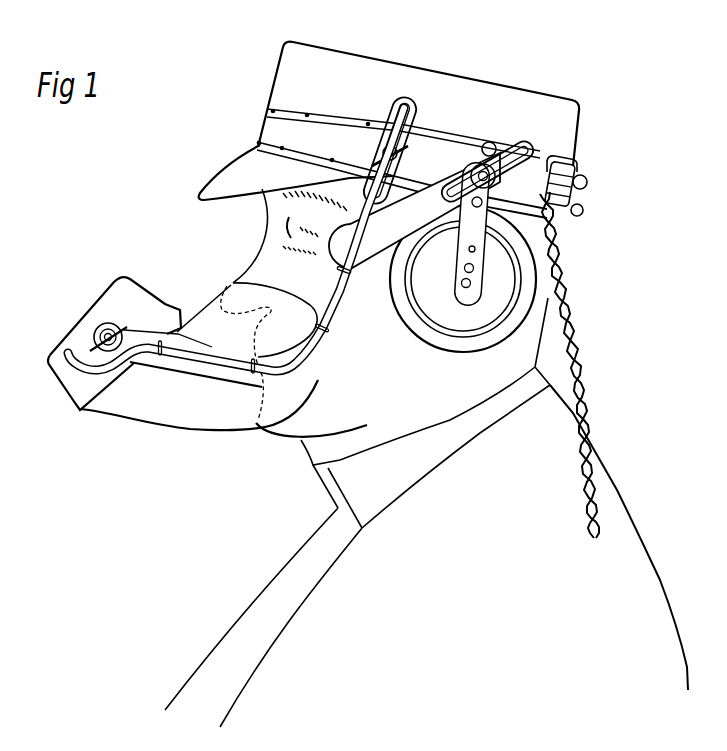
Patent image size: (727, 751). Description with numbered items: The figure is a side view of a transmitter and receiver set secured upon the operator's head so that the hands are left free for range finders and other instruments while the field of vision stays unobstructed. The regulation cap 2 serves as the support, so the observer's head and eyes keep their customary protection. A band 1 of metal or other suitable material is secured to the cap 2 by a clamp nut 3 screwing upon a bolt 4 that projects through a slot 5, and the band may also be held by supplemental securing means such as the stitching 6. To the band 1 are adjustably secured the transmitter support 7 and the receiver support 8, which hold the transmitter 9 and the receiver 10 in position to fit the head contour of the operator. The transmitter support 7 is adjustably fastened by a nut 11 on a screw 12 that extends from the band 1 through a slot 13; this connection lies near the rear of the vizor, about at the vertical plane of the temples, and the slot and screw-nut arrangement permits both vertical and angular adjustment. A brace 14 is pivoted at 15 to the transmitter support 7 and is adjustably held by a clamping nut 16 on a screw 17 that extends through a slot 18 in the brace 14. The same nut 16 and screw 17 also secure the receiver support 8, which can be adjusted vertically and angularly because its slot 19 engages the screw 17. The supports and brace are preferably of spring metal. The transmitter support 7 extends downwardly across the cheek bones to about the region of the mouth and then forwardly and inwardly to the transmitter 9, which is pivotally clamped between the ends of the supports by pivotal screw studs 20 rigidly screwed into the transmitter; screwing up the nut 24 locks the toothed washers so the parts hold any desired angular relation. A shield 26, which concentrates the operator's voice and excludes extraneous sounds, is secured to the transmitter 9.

The band 1 is at (402, 174).
The cap 2 is at (419, 104).
The clamp nut 3 is at (588, 184).
The bolt 4 is at (584, 207).
The slot 5 is at (566, 186).
The stitching 6 is at (306, 114).
The transmitter support 7 is at (341, 306).
The receiver support 8 is at (472, 234).
The transmitter 9 is at (141, 286).
The receiver 10 is at (463, 279).
The nut 11 is at (423, 125).
The screw 12 is at (368, 125).
The slot 13 is at (408, 108).
The brace 14 is at (414, 210).
The pivot 15 is at (356, 261).
The clamping nut 16 is at (507, 140).
The screw 17 is at (482, 164).
The slot 18 is at (443, 190).
The slot 19 is at (491, 142).
The pivotal screw stud 20 is at (97, 335).
The nut 24 is at (106, 326).
The shield 26 is at (199, 405).